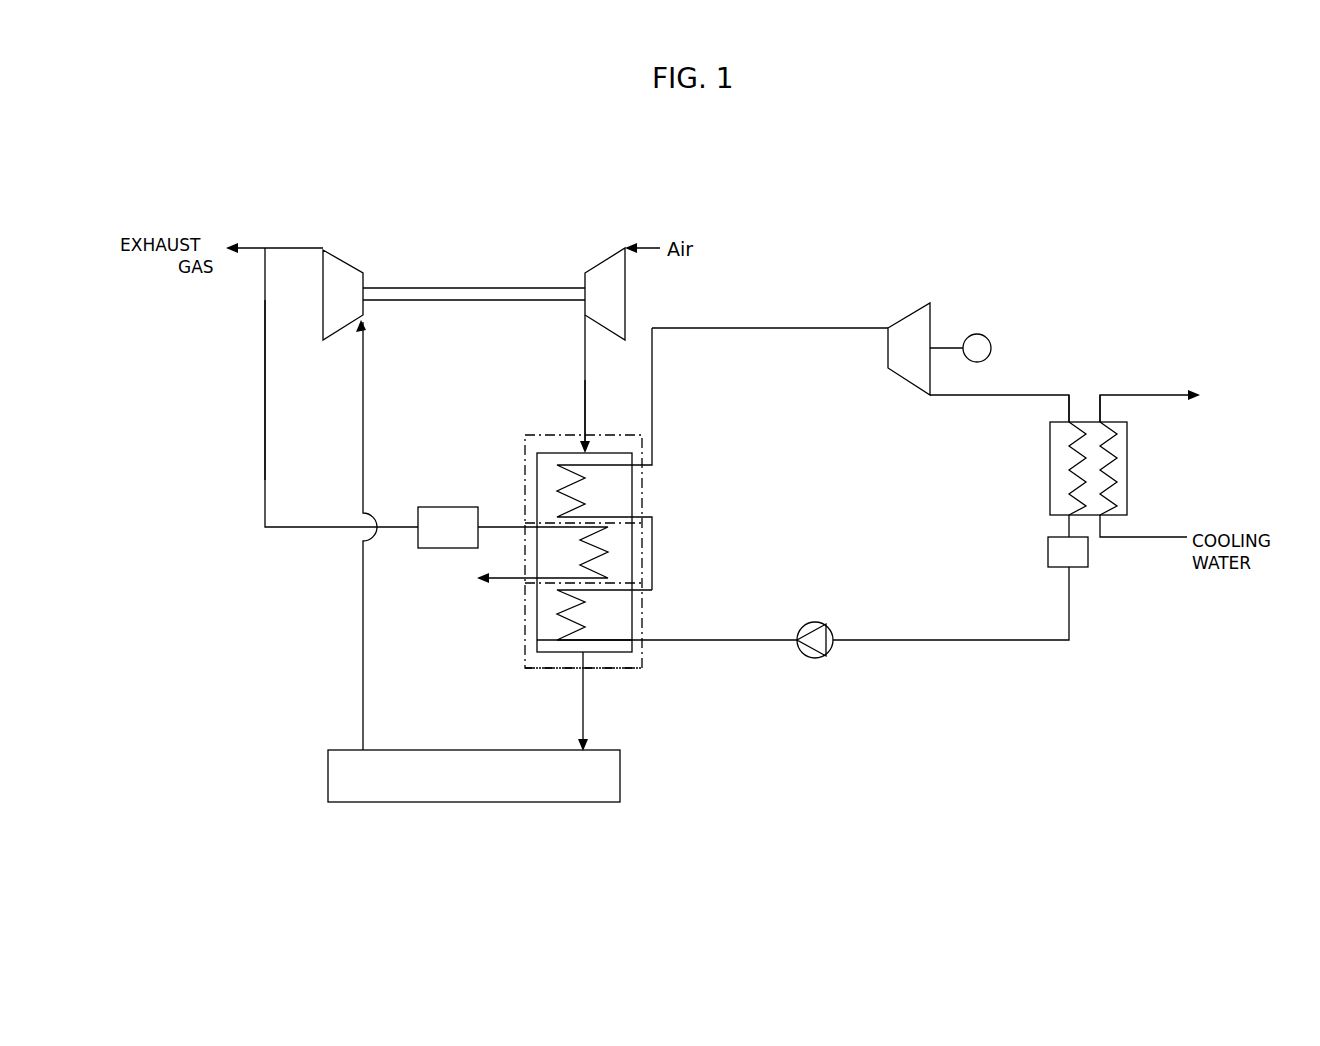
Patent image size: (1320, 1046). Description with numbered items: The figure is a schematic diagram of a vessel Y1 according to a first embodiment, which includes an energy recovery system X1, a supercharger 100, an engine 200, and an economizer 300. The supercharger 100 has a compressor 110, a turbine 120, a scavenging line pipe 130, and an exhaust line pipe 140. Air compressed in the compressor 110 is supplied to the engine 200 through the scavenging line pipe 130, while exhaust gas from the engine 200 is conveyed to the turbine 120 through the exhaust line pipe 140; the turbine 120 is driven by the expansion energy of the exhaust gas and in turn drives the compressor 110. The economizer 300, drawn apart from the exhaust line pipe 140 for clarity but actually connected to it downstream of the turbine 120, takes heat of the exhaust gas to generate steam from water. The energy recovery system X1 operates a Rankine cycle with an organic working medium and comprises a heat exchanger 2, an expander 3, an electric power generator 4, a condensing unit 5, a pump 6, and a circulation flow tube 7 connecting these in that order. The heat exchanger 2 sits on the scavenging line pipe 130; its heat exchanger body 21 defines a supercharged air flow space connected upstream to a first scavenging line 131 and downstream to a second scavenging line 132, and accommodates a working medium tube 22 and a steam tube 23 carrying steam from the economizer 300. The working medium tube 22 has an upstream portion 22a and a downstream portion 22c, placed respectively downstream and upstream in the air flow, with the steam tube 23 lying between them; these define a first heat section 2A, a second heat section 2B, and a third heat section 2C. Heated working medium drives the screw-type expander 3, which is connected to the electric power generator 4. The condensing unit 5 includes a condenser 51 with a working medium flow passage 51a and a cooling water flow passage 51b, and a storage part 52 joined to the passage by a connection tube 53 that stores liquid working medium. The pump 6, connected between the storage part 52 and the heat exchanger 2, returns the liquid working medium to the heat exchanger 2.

The supercharger 100 is at (472, 243).
The compressor 110 is at (594, 265).
The turbine 120 is at (335, 258).
The scavenging line pipe 130 is at (594, 402).
The first scavenging line 131 is at (583, 350).
The second scavenging line 132 is at (580, 728).
The exhaust line pipe 140 is at (362, 414).
The engine 200 is at (448, 804).
The economizer 300 is at (436, 506).
The heat exchanger 2 is at (560, 430).
The first heat section 2A is at (524, 648).
The second heat section 2B is at (505, 573).
The third heat section 2C is at (524, 452).
The heat exchanger body 21 is at (536, 478).
The working medium tube 22 is at (618, 652).
The upstream portion 22a is at (600, 598).
The downstream portion 22c is at (605, 488).
The steam tube 23 is at (580, 554).
The expander 3 is at (900, 322).
The electric power generator 4 is at (975, 334).
The condensing unit 5 is at (1154, 432).
The condenser 51 is at (1049, 460).
The working medium flow passage 51a is at (1076, 491).
The cooling water flow passage 51b is at (1110, 488).
The storage part 52 is at (1047, 553).
The connection tube 53 is at (1066, 525).
The pump 6 is at (820, 624).
The circulation flow tube 7 is at (808, 352).
The vessel Y1 is at (758, 254).
The energy recovery system X1 is at (1082, 335).